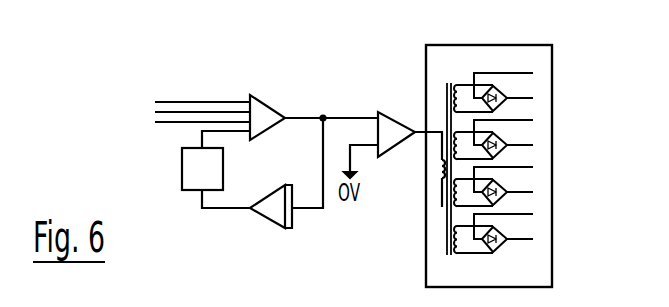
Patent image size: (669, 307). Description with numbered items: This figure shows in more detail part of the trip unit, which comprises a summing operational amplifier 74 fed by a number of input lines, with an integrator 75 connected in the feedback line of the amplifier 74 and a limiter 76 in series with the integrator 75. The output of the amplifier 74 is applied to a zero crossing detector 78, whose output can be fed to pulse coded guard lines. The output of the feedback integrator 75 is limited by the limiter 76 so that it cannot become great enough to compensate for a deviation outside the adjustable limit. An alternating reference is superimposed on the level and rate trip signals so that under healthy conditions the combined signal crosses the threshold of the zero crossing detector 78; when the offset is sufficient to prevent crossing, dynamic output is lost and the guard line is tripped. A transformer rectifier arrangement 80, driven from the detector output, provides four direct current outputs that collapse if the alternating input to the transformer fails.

The summing operational amplifier 74 is at (262, 100).
The integrator 75 is at (264, 214).
The limiter 76 is at (212, 181).
The zero crossing detector 78 is at (383, 150).
The transformer rectifier arrangement 80 is at (448, 45).